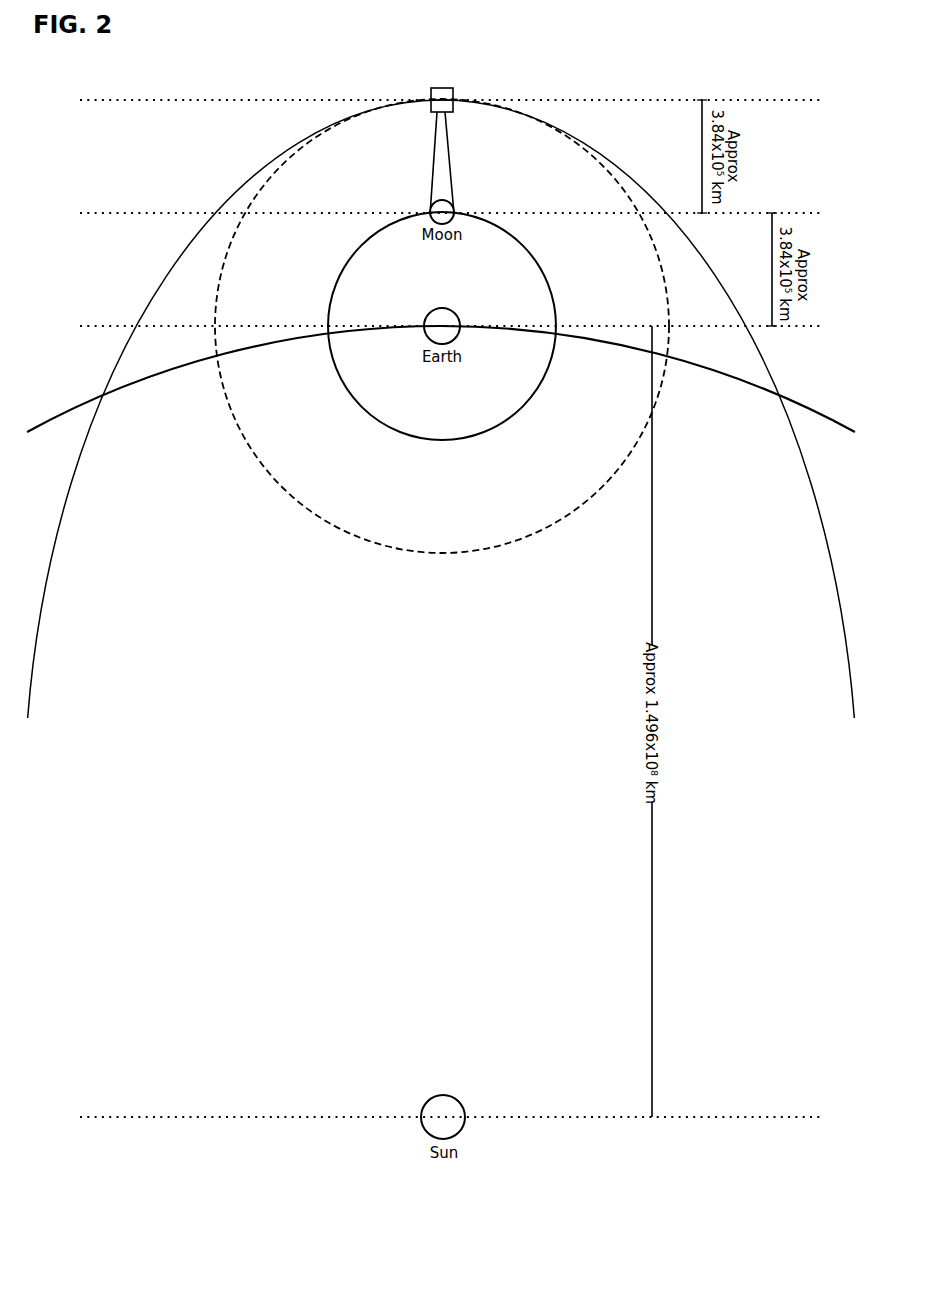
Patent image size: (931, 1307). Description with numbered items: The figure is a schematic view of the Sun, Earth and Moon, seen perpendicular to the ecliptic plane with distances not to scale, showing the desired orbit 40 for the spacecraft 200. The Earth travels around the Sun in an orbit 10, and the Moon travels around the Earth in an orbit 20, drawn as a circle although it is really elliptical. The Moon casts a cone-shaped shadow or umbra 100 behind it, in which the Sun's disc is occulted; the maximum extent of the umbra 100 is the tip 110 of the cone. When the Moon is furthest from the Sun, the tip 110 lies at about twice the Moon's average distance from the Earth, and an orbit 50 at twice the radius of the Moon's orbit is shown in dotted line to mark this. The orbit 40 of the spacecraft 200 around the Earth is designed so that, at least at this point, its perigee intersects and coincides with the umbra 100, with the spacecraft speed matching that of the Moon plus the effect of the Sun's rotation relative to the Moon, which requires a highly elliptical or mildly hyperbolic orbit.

The orbit 10 is at (187, 365).
The orbit 20 is at (330, 302).
The desired orbit 40 is at (65, 510).
The orbit 50 is at (533, 534).
The umbra 100 is at (442, 182).
The tip 110 is at (433, 99).
The spacecraft 200 is at (442, 94).